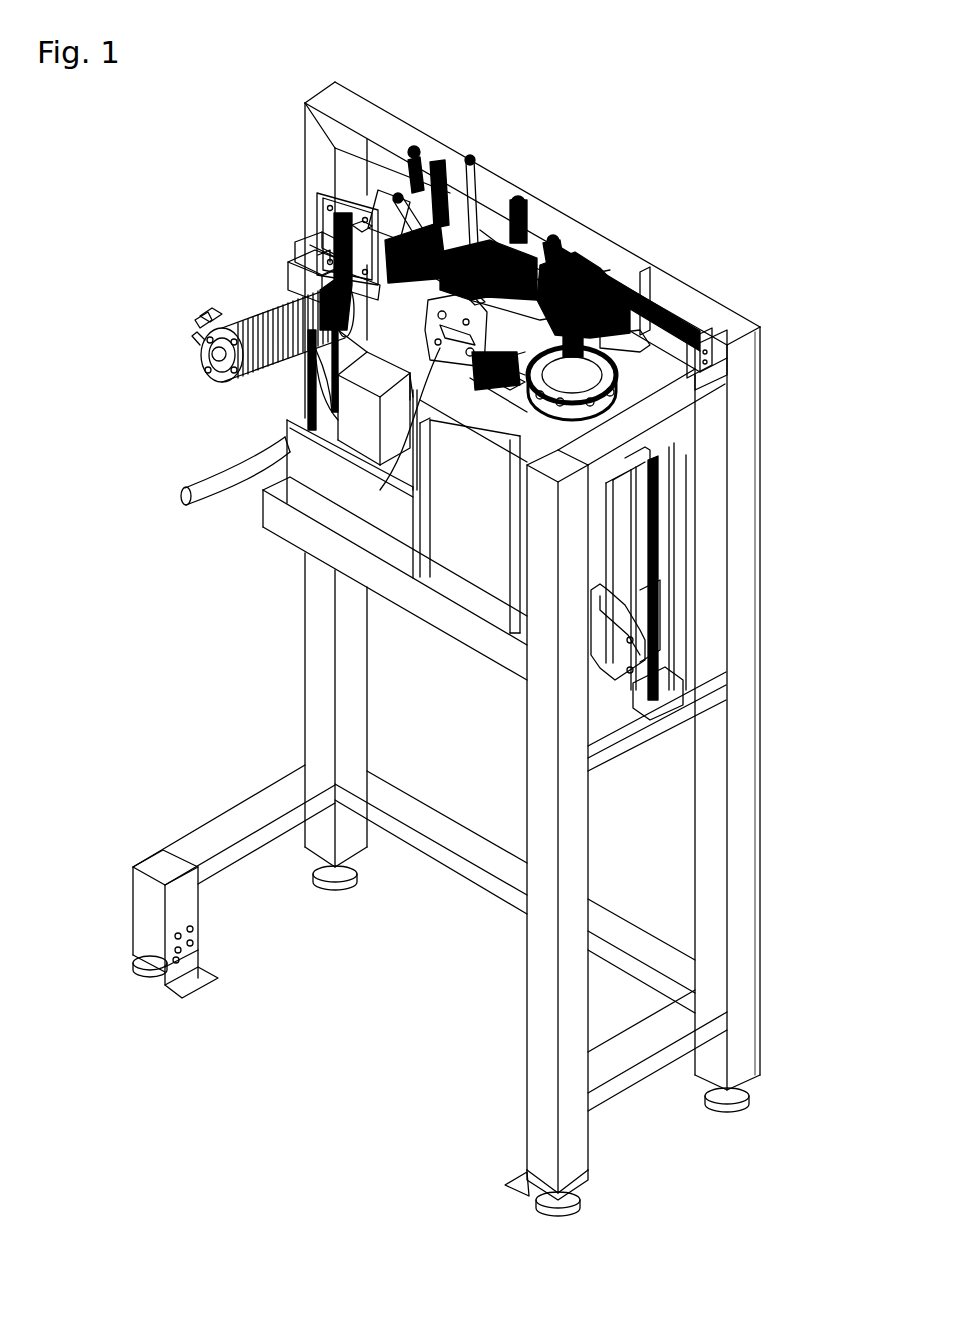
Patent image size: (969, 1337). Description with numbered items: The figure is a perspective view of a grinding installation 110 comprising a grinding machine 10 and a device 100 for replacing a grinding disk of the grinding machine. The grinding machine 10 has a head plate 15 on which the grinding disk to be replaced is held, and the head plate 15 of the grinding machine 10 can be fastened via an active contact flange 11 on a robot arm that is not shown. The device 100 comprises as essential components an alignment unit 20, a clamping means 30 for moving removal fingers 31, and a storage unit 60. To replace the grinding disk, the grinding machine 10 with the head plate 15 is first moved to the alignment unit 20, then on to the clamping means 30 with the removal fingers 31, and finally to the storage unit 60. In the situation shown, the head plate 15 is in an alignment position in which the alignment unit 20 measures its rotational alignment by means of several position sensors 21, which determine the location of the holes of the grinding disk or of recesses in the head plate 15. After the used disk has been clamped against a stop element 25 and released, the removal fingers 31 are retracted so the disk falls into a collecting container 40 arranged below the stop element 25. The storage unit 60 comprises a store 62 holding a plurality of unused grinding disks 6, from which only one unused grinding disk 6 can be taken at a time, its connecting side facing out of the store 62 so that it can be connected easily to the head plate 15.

The grinding installation 110 is at (715, 100).
The device for replacing a grinding disk 100 is at (590, 226).
The storage unit 60 is at (690, 302).
The store 62 is at (703, 382).
The clamping means 30 is at (523, 216).
The alignment unit 20 is at (317, 220).
The position sensors 21 is at (308, 248).
The grinding machine 10 is at (290, 247).
The active contact flange 11 is at (237, 297).
The head plate 15 is at (377, 325).
The stop element 25 is at (452, 327).
The removal fingers 31 is at (502, 380).
The unused grinding disk 6 is at (552, 383).
The collecting container 40 is at (323, 497).